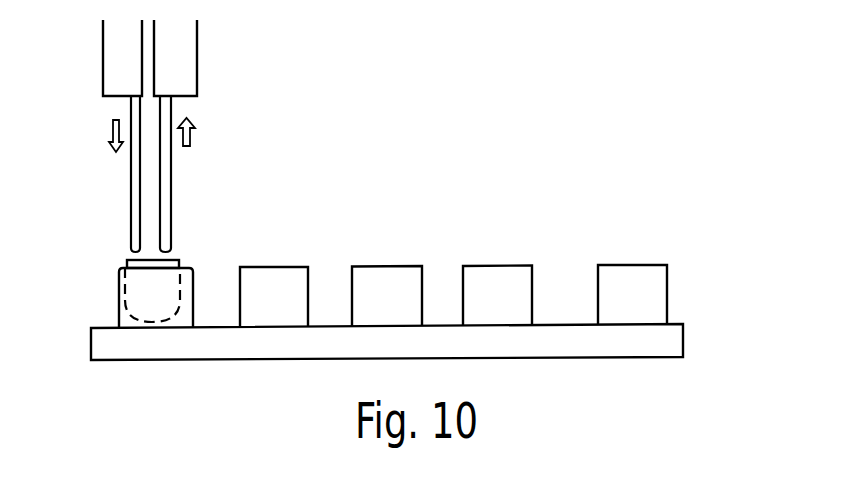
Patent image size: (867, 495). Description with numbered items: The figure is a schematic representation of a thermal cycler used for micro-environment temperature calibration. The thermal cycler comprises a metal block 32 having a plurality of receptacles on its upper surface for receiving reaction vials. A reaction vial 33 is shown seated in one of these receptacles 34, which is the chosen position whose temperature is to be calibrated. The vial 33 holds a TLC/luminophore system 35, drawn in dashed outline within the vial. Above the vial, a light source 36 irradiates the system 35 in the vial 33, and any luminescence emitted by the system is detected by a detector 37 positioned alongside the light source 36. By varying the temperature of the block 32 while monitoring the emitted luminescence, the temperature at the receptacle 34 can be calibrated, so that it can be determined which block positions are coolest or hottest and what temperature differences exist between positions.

The metal block 32 is at (683, 345).
The reaction vial 33 is at (179, 262).
The receptacle 34 is at (119, 274).
The TLC/luminophore system 35 is at (153, 295).
The light source 36 is at (103, 60).
The detector 37 is at (197, 60).